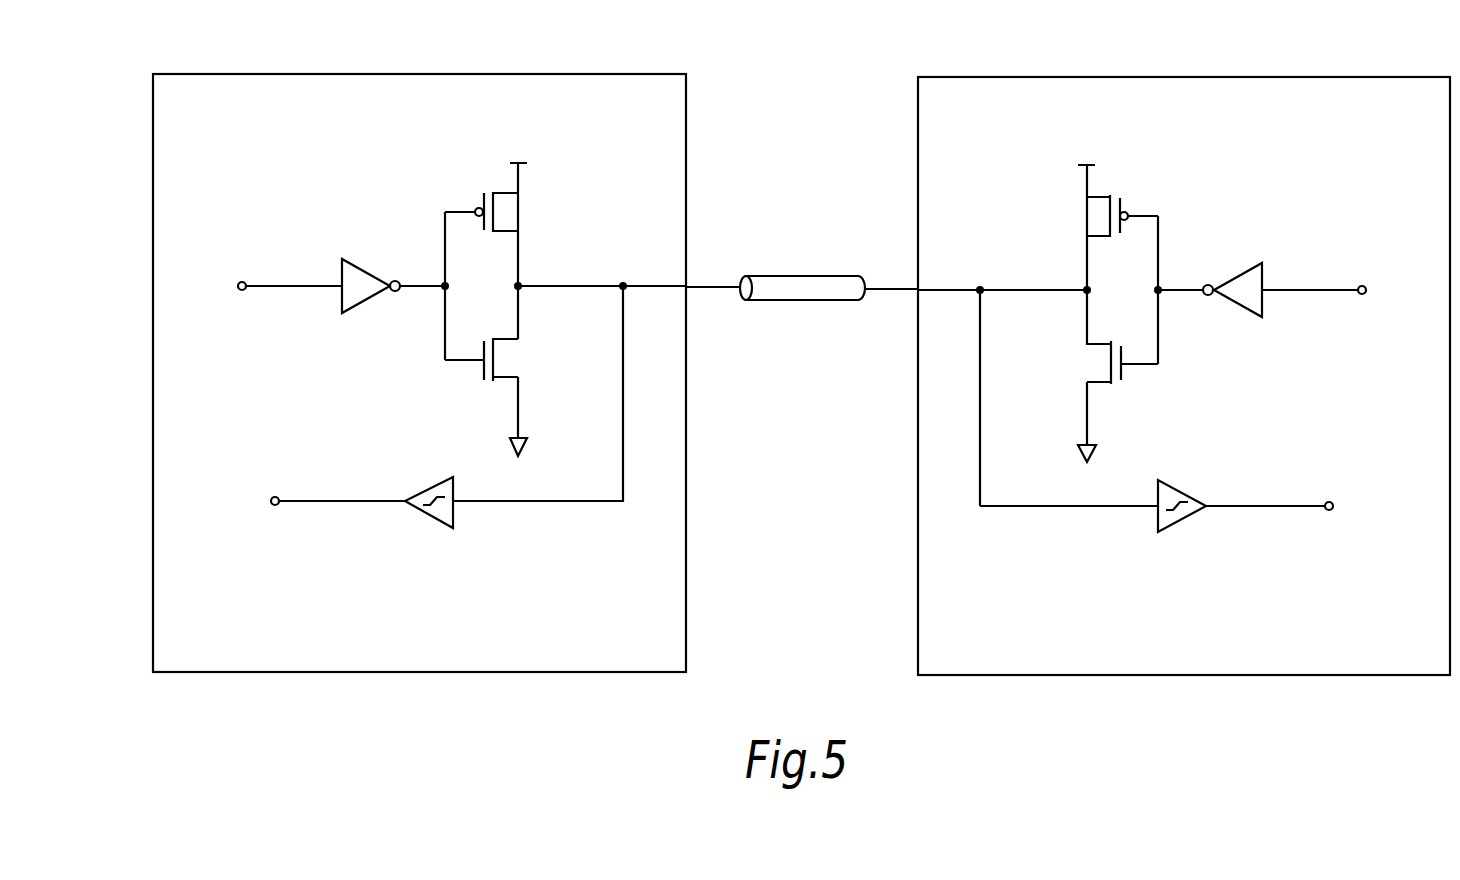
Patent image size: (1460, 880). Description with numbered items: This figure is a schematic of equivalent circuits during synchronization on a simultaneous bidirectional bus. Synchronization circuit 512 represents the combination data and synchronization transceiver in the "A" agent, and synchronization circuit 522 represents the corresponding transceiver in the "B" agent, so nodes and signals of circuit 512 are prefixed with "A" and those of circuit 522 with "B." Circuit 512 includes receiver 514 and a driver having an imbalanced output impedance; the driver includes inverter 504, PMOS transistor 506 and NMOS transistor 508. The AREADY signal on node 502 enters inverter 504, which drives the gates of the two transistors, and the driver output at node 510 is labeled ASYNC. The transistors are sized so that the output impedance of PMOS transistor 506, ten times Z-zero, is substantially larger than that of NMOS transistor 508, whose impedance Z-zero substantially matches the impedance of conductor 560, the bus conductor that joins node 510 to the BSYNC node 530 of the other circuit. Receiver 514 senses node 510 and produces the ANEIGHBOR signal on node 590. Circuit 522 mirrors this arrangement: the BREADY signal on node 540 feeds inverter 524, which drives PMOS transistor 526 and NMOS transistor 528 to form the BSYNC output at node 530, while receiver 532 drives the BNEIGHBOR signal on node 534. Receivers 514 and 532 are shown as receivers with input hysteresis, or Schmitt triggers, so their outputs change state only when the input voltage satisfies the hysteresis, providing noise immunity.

The node 502 is at (242, 282).
The inverter 504 is at (341, 270).
The PMOS transistor 506 is at (489, 190).
The NMOS transistor 508 is at (488, 380).
The node 510 is at (623, 290).
The synchronization circuit 512 is at (582, 73).
The receiver 514 is at (433, 518).
The synchronization circuit 522 is at (1023, 77).
The inverter 524 is at (1265, 273).
The PMOS transistor 526 is at (1118, 195).
The NMOS transistor 528 is at (1117, 386).
The node 530 is at (985, 293).
The receiver 532 is at (1181, 524).
The node 534 is at (1327, 501).
The node 540 is at (1361, 281).
The conductor 560 is at (800, 300).
The node 590 is at (279, 498).